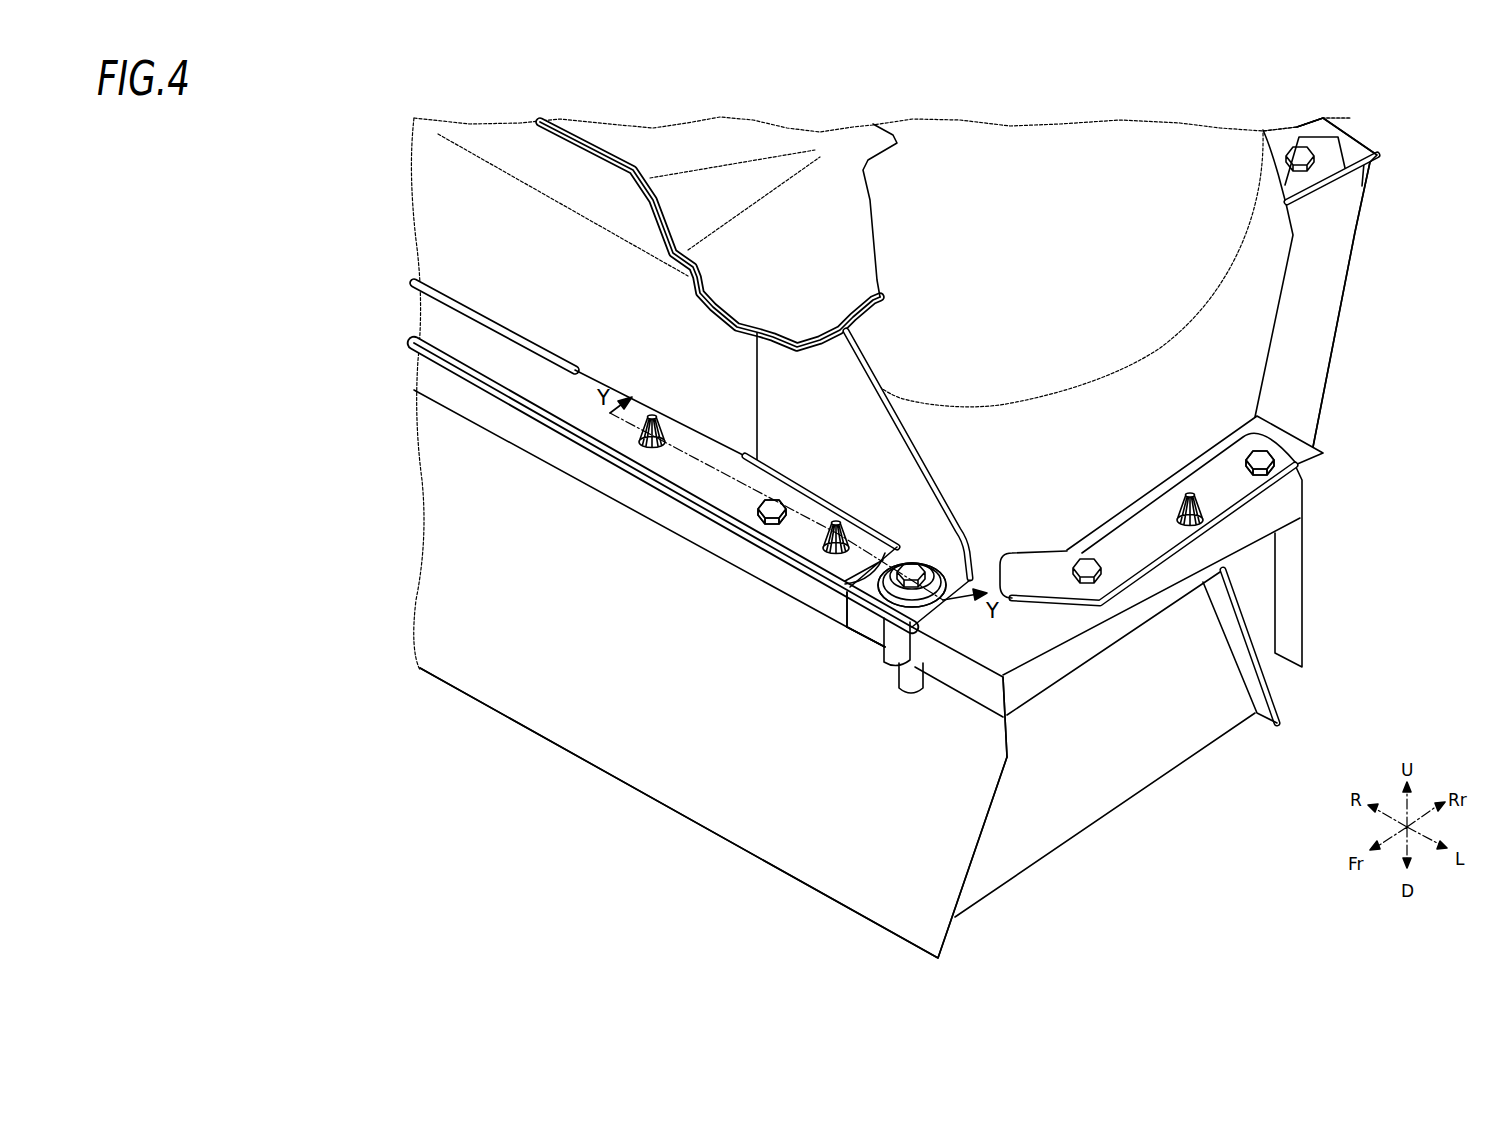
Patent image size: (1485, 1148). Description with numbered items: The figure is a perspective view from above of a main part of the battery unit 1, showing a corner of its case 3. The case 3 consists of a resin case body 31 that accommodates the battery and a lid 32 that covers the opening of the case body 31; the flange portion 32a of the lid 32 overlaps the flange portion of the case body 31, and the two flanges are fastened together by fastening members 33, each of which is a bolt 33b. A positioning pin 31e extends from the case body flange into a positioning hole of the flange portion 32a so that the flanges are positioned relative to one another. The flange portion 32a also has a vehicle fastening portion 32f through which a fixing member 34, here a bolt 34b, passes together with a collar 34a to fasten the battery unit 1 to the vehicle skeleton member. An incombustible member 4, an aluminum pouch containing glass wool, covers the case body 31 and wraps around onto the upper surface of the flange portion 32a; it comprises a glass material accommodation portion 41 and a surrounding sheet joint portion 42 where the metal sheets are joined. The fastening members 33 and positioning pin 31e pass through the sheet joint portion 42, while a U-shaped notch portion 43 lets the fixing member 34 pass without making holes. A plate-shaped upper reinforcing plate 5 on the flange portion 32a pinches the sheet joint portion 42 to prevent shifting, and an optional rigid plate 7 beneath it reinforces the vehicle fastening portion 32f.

The battery unit 1 is at (1210, 118).
The case 3 is at (1210, 118).
The incombustible member 4 is at (475, 548).
The upper reinforcing plate 5 is at (506, 367).
The rigid plate 7 is at (873, 420).
The case body 31 is at (581, 684).
The positioning pin 31e is at (658, 412).
The lid 32 is at (480, 224).
The flange portion 32a is at (842, 714).
The vehicle fastening portion 32f is at (867, 625).
The fastening member 33 is at (774, 497).
The bolt 33b is at (1016, 442).
The fixing member 34 is at (918, 562).
The collar 34a is at (888, 653).
The bolt 34b is at (941, 521).
The glass material accommodation portion 41 is at (693, 523).
The sheet joint portion 42 is at (920, 557).
The notch portion 43 is at (858, 620).